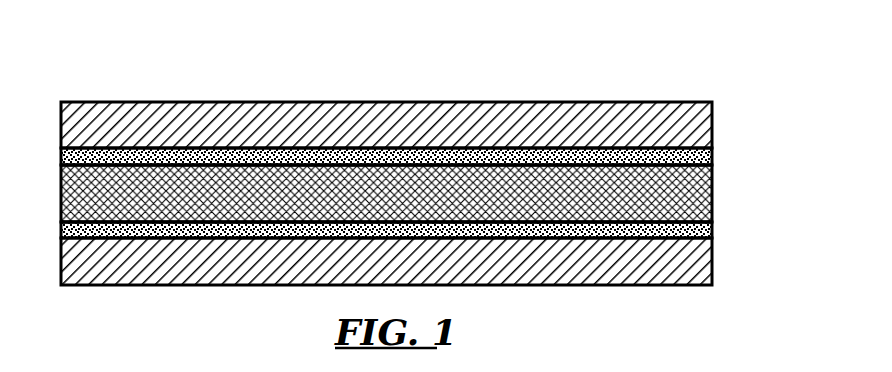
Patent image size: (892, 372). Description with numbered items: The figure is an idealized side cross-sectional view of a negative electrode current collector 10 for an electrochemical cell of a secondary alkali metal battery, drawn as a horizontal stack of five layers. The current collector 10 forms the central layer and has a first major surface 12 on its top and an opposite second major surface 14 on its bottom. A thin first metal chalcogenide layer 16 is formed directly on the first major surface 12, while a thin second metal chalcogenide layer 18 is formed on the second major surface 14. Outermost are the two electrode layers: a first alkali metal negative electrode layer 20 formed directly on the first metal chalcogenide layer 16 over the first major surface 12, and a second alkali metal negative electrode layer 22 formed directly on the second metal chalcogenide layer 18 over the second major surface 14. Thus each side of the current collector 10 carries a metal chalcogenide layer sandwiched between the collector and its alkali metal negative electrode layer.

The negative electrode current collector 10 is at (713, 195).
The first major surface 12 is at (650, 165).
The second major surface 14 is at (650, 222).
The first metal chalcogenide layer 16 is at (713, 155).
The second metal chalcogenide layer 18 is at (713, 230).
The first alkali metal negative electrode layer 20 is at (713, 115).
The second alkali metal negative electrode layer 22 is at (713, 272).